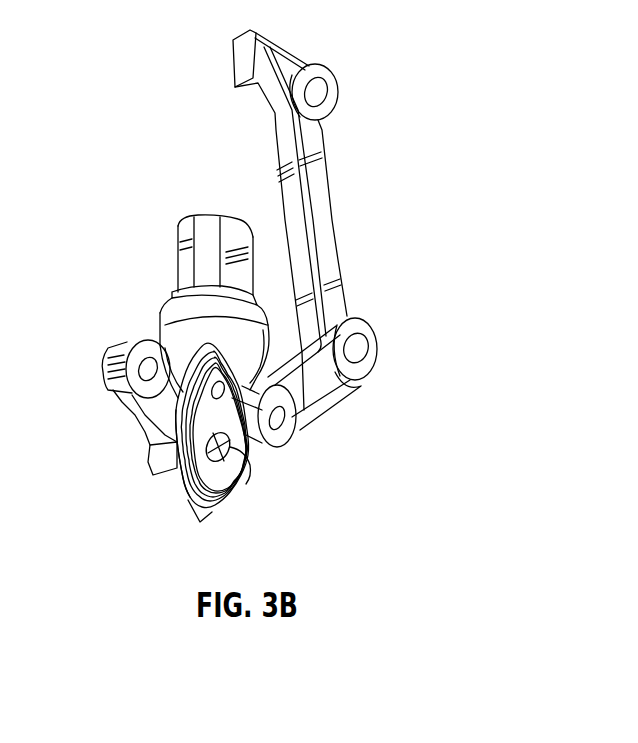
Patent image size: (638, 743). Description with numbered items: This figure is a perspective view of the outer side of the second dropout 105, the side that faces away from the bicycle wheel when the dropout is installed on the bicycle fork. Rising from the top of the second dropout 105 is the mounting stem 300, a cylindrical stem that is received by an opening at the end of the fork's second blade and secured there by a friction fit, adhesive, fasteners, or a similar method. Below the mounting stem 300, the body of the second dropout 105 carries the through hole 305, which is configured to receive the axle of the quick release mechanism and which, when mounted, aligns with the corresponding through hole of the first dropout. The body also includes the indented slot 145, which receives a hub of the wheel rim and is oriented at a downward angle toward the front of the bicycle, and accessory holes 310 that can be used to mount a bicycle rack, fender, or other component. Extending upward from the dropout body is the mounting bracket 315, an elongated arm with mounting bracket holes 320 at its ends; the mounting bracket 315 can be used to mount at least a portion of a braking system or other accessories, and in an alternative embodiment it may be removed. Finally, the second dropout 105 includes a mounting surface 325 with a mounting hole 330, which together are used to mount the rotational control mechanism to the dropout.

The mounting stem 300 is at (190, 255).
The through hole 305 is at (248, 492).
The accessory holes 310 is at (108, 392).
The mounting bracket 315 is at (320, 183).
The mounting bracket holes 320 is at (318, 90).
The mounting surface 325 is at (192, 518).
The mounting hole 330 is at (258, 446).
The second dropout 105 is at (146, 442).
The indented slot 145 is at (192, 491).